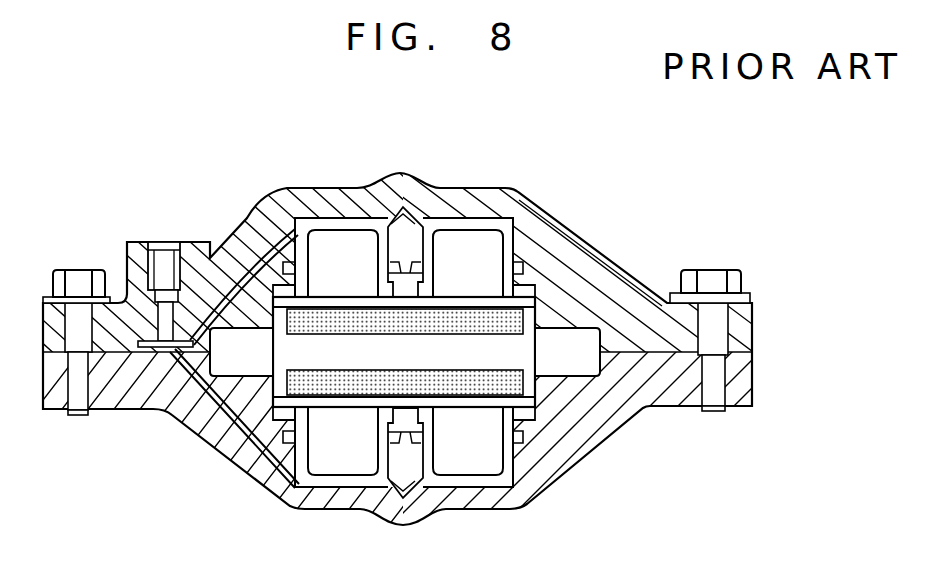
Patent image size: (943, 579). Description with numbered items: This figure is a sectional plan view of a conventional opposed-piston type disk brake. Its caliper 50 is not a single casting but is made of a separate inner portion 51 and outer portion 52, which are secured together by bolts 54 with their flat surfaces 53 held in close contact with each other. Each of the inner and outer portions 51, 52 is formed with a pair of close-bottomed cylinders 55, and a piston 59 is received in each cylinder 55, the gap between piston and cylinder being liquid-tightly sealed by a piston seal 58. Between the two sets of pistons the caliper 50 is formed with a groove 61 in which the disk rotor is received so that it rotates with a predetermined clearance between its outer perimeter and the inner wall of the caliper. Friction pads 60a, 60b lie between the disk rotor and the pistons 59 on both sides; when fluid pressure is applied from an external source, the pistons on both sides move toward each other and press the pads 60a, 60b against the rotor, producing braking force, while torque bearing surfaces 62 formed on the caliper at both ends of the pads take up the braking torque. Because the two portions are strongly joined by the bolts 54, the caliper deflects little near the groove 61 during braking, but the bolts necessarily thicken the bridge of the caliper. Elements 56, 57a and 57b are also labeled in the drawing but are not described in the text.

The caliper 50 is at (583, 230).
The inner portion 51 is at (624, 297).
The outer portion 52 is at (587, 433).
The flat surfaces 53 is at (752, 345).
The bolts 54 is at (713, 280).
The cylinder 55 is at (508, 262).
The screw 56 is at (162, 258).
The upper housing half 57a is at (237, 258).
The lower housing half 57b is at (243, 445).
The piston seal 58 is at (284, 258).
The piston 59 is at (303, 248).
The friction pad 60a is at (451, 300).
The friction pad 60b is at (482, 397).
The groove 61 is at (232, 365).
The torque bearing surfaces 62 is at (280, 378).